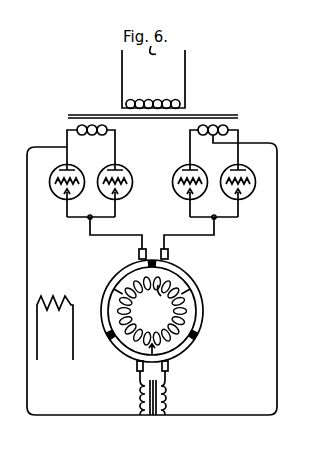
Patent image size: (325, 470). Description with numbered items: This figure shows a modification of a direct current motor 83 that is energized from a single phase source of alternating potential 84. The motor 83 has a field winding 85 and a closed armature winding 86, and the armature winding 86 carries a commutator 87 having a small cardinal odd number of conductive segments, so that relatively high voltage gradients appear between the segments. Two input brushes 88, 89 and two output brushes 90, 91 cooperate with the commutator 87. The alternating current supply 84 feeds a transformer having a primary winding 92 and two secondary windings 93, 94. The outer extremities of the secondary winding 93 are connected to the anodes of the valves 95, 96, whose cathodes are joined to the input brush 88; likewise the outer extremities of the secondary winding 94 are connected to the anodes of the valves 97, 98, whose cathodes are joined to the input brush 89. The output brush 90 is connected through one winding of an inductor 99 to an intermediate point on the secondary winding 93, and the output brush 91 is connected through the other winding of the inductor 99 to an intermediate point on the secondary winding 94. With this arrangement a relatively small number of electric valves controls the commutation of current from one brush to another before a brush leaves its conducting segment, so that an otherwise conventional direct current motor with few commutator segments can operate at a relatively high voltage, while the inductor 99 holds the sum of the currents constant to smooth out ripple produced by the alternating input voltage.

The direct current motor 83 is at (88, 280).
The single phase source of alternating potential 84 is at (183, 67).
The field winding 85 is at (56, 318).
The closed armature winding 86 is at (152, 315).
The commutator 87 is at (204, 315).
The input brush 88 is at (139, 253).
The input brush 89 is at (168, 253).
The output brush 90 is at (137, 368).
The output brush 91 is at (168, 368).
The primary winding 92 is at (186, 103).
The secondary winding 93 is at (115, 129).
The secondary winding 94 is at (190, 130).
The valve 95 is at (77, 172).
The valve 96 is at (128, 172).
The valve 97 is at (203, 172).
The valve 98 is at (251, 172).
The inductor 99 is at (151, 416).